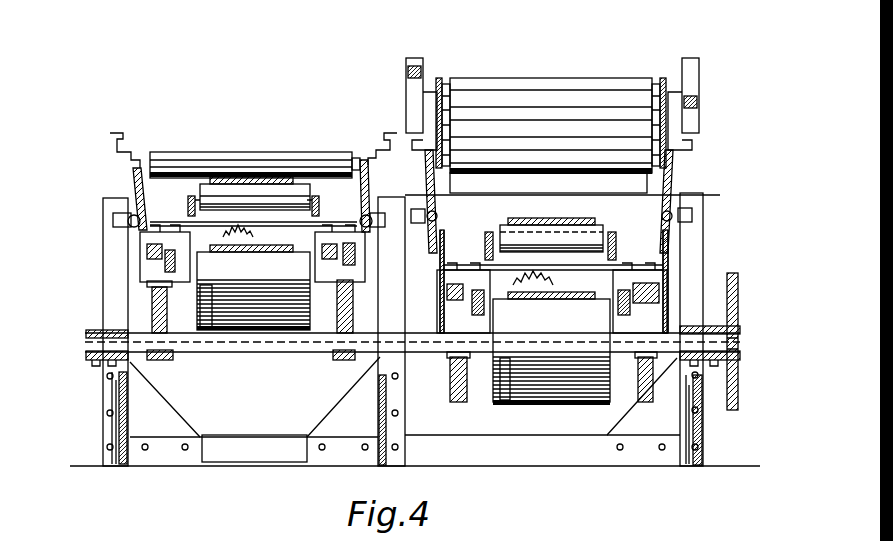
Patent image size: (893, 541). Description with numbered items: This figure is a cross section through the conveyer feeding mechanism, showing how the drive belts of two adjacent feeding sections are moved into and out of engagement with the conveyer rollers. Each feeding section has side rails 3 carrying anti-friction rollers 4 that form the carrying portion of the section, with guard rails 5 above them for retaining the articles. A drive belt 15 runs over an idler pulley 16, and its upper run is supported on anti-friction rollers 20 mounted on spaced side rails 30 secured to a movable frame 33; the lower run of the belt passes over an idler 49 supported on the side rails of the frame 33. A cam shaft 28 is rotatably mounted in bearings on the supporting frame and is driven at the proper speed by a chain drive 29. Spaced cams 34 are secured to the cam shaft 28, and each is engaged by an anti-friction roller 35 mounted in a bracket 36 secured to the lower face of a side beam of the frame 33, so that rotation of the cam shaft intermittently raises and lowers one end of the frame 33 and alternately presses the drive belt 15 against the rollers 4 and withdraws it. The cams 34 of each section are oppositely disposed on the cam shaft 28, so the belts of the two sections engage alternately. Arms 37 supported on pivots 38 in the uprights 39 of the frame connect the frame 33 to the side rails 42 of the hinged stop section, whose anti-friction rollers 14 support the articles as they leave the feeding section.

The side rails 3 is at (131, 180).
The anti-friction rollers 4 is at (222, 150).
The guard rails 5 is at (122, 135).
The anti-friction rollers 14 is at (552, 85).
The drive belt 15 is at (277, 180).
The idler pulley 16 is at (203, 322).
The anti-friction rollers 20 is at (300, 190).
The cam shaft 28 is at (200, 355).
The chain drive 29 is at (735, 410).
The side rails 30 is at (190, 205).
The frame 33 is at (140, 233).
The cams 34 is at (150, 311).
The anti-friction roller 35 is at (143, 285).
The brackets 36 is at (140, 262).
The arms 37 is at (128, 228).
The pivots 38 is at (113, 220).
The uprights 39 is at (103, 205).
The side rails 42 is at (445, 85).
The idler 49 is at (290, 300).